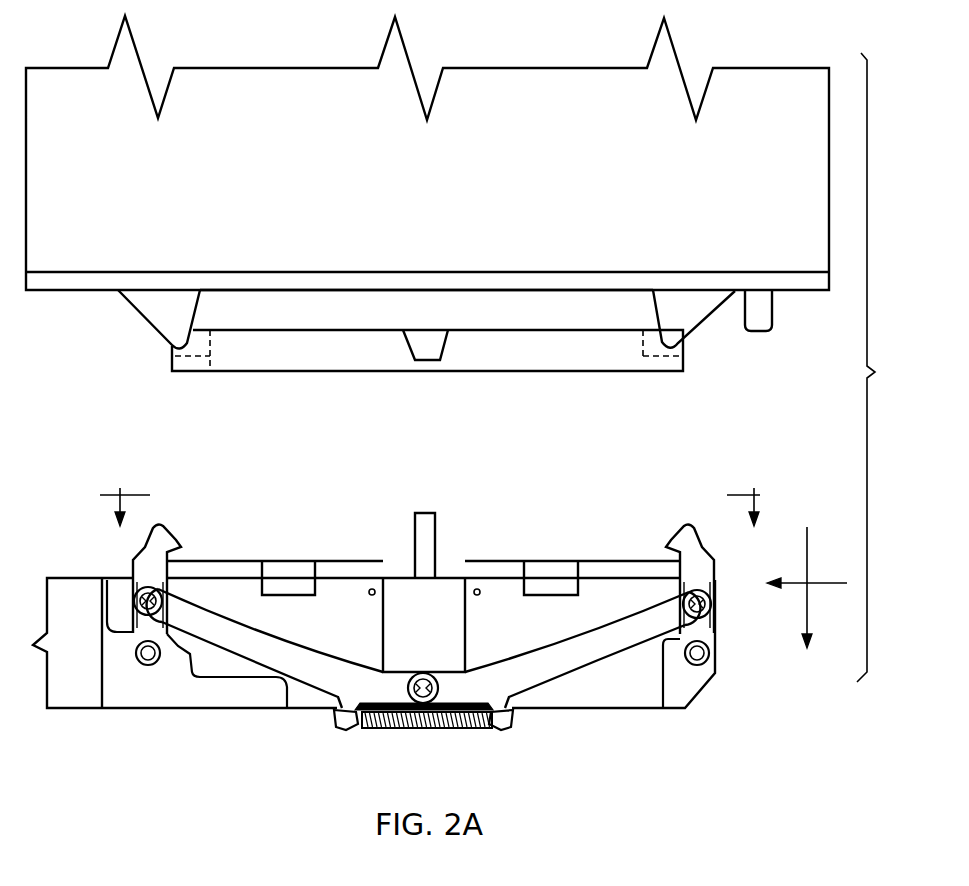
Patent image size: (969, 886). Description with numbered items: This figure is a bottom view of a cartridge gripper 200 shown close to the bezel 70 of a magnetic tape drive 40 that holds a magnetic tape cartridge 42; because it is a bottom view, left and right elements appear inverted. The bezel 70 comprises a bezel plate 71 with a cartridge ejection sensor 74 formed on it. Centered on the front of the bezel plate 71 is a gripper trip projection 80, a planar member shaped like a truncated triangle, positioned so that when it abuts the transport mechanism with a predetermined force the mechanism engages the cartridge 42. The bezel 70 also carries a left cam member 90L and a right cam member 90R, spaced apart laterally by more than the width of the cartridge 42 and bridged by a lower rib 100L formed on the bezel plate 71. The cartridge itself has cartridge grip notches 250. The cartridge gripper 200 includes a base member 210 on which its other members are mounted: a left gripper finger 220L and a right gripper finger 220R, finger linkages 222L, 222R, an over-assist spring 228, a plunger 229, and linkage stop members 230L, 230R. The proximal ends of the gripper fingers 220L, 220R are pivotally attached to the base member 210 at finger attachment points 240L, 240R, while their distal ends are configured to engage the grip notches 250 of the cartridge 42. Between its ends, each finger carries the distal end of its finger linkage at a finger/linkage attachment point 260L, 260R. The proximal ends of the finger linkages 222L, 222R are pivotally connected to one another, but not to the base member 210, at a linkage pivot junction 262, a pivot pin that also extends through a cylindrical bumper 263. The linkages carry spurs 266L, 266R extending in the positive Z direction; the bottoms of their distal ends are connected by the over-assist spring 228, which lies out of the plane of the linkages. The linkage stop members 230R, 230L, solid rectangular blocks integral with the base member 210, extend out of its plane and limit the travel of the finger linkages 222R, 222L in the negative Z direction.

The drive 40 is at (418, 197).
The magnetic tape cartridge 42 is at (530, 373).
The bezel 70 is at (815, 302).
The bezel plate 71 is at (524, 284).
The cartridge ejection sensor 74 is at (772, 317).
The gripper trip projection 80 is at (445, 355).
The right cam member 90R is at (145, 318).
The left cam member 90L is at (705, 322).
The lower rib 100L is at (430, 325).
The cartridge grip notches 250 is at (205, 372).
The cartridge gripper 200 is at (775, 692).
The base member 210 is at (133, 710).
The right gripper finger 220R is at (165, 530).
The left gripper finger 220L is at (680, 533).
The right finger linkage 222R is at (272, 643).
The left finger linkage 222L is at (560, 647).
The over-assist spring 228 is at (447, 728).
The plunger 229 is at (430, 540).
The right linkage stop member 230R is at (290, 568).
The left linkage stop member 230L is at (548, 570).
The right finger attachment point 240R is at (153, 657).
The left finger attachment point 240L is at (710, 656).
The right finger/linkage attachment point 260R is at (140, 593).
The left finger/linkage attachment point 260L is at (708, 606).
The linkage pivot junction 262 is at (383, 728).
The bumper 263 is at (420, 675).
The right spur 266R is at (337, 720).
The left spur 266L is at (517, 713).